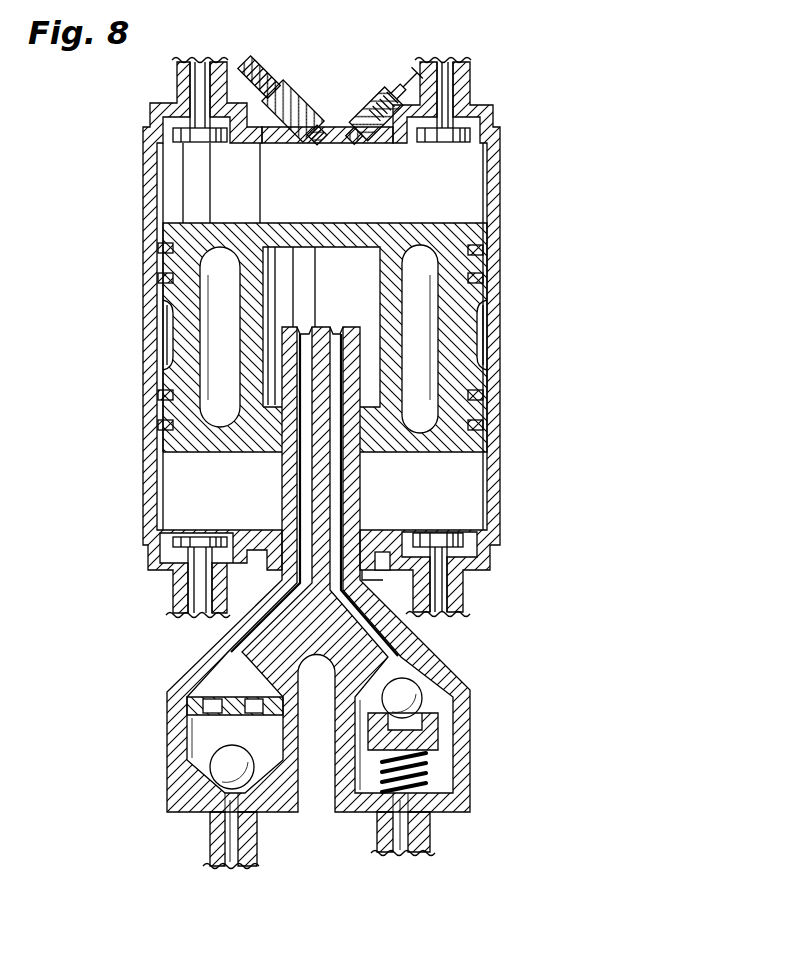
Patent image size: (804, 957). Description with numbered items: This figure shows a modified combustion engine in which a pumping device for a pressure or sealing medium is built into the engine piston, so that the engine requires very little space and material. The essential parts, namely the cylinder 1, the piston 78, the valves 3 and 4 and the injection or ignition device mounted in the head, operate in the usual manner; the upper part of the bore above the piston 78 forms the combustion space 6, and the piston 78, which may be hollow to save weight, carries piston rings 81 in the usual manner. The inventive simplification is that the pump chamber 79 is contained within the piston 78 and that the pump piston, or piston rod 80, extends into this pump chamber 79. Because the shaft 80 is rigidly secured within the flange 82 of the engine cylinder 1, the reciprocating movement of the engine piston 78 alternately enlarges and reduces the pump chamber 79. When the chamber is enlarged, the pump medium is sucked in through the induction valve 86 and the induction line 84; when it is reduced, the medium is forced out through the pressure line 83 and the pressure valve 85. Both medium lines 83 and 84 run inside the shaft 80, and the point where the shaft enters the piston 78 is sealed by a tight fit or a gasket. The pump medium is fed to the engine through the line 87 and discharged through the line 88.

The cylinder 1 is at (487, 466).
The valve 3 is at (430, 134).
The valve 4 is at (198, 136).
The combustion chamber 6 is at (430, 193).
The piston 78 is at (450, 338).
The pump chamber 79 is at (333, 266).
The piston rod 80 is at (317, 340).
The piston ring 81 is at (487, 250).
The flange 82 is at (373, 562).
The pressure line 83 is at (338, 495).
The induction line 84 is at (303, 467).
The pressure valve 85 is at (408, 697).
The induction valve 86 is at (223, 765).
The line 87 is at (232, 842).
The line 88 is at (403, 830).